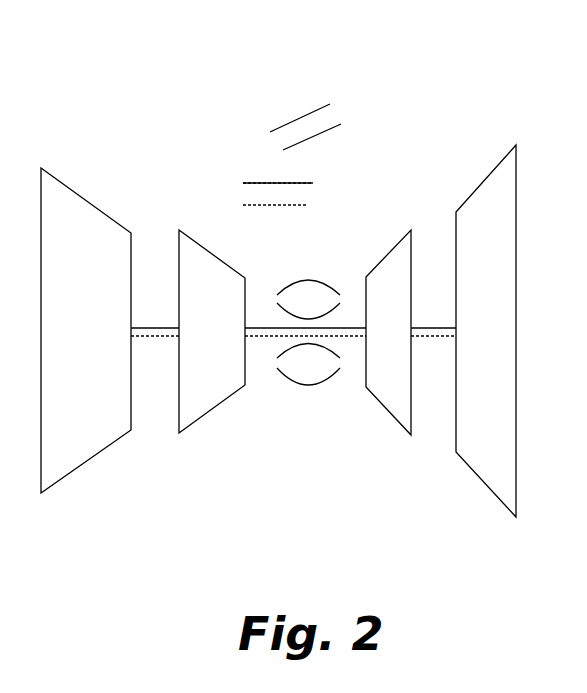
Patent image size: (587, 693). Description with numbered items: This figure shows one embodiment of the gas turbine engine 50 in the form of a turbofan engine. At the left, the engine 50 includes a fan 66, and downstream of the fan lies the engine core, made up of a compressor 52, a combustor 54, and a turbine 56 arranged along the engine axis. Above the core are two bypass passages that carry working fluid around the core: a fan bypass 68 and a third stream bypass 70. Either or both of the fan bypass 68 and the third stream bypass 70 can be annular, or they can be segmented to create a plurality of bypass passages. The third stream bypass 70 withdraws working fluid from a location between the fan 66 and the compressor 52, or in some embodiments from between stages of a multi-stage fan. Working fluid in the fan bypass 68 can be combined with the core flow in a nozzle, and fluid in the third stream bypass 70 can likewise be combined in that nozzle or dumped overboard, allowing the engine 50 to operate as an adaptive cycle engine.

The gas turbine engine 50 is at (413, 148).
The compressor 52 is at (205, 422).
The combustor 54 is at (300, 386).
The turbine 56 is at (421, 473).
The fan 66 is at (72, 475).
The fan bypass 68 is at (293, 183).
The third stream bypass 70 is at (293, 118).